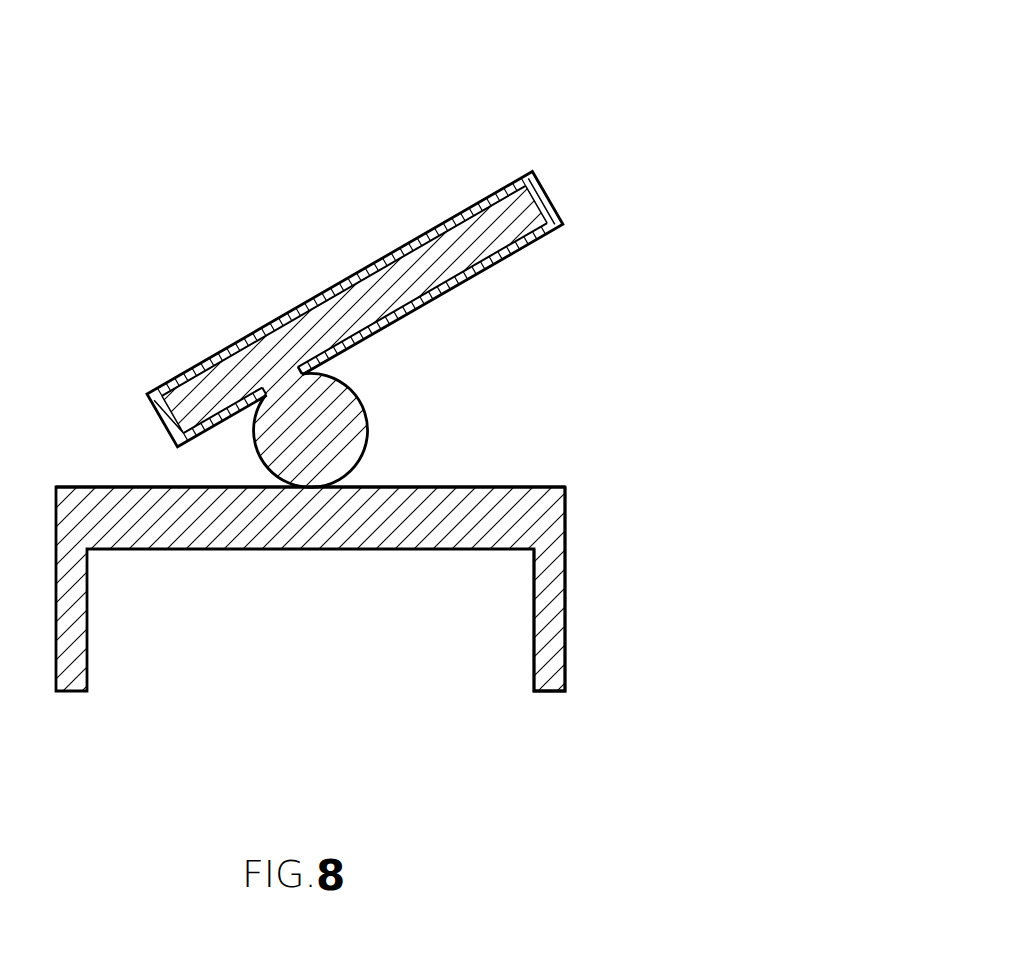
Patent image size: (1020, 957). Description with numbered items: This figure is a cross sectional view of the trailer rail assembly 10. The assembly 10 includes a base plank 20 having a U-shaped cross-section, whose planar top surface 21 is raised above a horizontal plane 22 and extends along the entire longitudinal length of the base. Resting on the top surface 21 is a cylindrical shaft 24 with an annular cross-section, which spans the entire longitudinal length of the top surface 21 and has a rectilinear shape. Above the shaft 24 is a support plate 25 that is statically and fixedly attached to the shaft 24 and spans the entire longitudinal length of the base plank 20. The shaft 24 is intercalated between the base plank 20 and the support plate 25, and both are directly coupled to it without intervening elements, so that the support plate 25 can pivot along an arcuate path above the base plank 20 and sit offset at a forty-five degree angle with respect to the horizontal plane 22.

The trailer rail assembly 10 is at (175, 172).
The base plank 20 is at (510, 478).
The planar top surface 21 is at (535, 487).
The horizontal plane 22 is at (565, 560).
The cylindrical shaft 24 is at (358, 417).
The support plate 25 is at (542, 187).